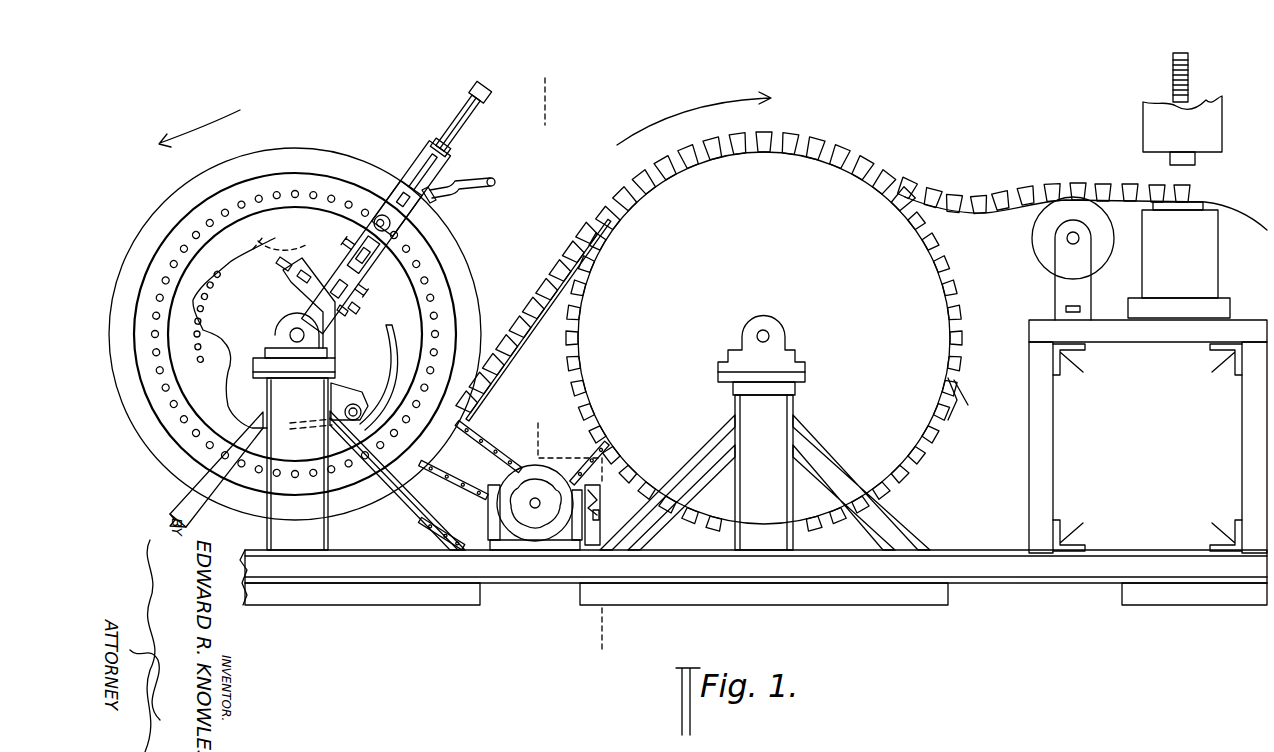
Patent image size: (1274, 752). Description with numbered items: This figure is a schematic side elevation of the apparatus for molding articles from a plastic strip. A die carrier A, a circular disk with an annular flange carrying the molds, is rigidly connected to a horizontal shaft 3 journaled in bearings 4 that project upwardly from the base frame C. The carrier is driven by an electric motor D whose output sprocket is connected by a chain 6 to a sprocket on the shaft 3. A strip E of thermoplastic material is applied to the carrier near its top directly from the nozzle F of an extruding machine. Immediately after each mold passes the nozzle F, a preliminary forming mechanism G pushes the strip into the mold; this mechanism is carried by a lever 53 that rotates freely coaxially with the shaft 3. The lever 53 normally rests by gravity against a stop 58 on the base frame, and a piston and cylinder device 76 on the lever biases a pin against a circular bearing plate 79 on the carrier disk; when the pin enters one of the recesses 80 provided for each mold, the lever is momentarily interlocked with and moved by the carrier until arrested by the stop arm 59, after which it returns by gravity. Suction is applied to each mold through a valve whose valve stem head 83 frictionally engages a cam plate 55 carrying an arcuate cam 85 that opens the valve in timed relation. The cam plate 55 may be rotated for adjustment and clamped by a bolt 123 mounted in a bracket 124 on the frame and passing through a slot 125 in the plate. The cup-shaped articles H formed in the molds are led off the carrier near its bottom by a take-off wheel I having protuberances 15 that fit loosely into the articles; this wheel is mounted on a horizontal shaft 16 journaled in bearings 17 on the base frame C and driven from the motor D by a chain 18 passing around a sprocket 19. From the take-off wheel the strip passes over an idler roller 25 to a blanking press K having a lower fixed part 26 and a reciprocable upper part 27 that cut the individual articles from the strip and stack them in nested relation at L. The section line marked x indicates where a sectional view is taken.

The die carrier A is at (306, 138).
The circular bearing plate 79 is at (176, 244).
The recess 80 is at (227, 212).
The valve stem head 83 is at (207, 381).
The cam plate 55 is at (244, 311).
The arcuate cam 85 is at (260, 260).
The horizontal shaft 3 is at (292, 330).
The bearings 4 is at (284, 338).
The stop arm 59 is at (296, 264).
The stop 58 is at (349, 308).
The preliminary forming mechanism G is at (433, 124).
The combined mounting and actuating first element or lever 53 is at (418, 166).
The piston and cylinder device 76 is at (391, 224).
The nozzle F is at (468, 181).
The slot 125 is at (397, 328).
The bracket 124 is at (358, 388).
The bolt 123 is at (350, 420).
The chain 6 is at (490, 440).
The electric motor D is at (536, 543).
The chain 18 is at (582, 464).
The sprocket 19 is at (600, 516).
The section line x is at (580, 367).
The cup or other article H is at (592, 232).
The take-off wheel I is at (570, 365).
The bearings 17 is at (772, 328).
The horizontal shaft 16 is at (770, 336).
The protuberances 15 is at (950, 420).
The base frame C is at (972, 550).
The idler roller 25 is at (1052, 248).
The lower fixed part 26 is at (1214, 232).
The reciprocable upper part 27 is at (1212, 104).
The blanking press K is at (1136, 110).
The stacked articles L is at (1176, 70).
The strip of thermoplastic material E is at (1236, 208).